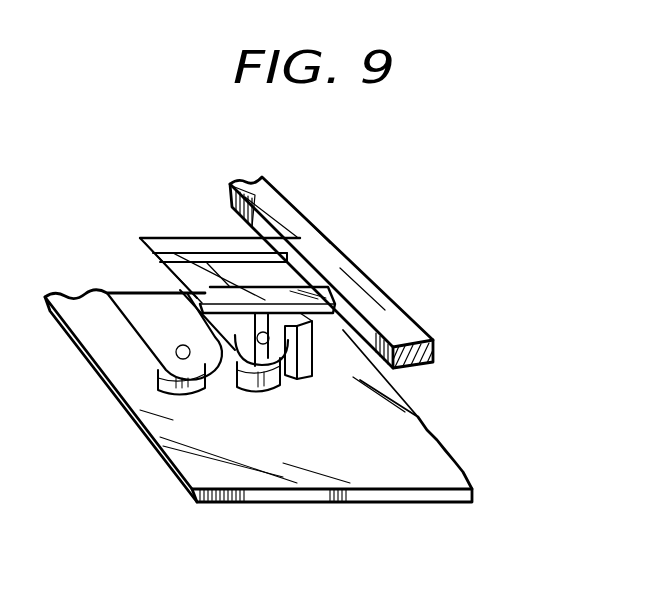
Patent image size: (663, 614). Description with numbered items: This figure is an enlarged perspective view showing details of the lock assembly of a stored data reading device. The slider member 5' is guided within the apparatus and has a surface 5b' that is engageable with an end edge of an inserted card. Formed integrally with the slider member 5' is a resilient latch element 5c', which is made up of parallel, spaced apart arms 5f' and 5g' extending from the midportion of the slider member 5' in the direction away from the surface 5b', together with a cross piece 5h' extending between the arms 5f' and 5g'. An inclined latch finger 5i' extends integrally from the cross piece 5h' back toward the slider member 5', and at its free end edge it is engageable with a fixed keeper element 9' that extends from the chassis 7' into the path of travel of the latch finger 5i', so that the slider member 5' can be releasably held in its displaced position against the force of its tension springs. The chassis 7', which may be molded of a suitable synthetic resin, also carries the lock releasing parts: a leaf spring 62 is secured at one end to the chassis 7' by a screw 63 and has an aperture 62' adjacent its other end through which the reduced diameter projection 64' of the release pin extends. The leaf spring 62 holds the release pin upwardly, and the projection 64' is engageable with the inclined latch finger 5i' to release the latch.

The slider member 5' is at (331, 272).
The surface 5b' is at (455, 334).
The resilient latch element 5c' is at (185, 159).
The arm 5f' is at (220, 193).
The arm 5g' is at (132, 237).
The cross piece 5h' is at (206, 236).
The inclined latch finger 5i' is at (257, 242).
The keeper element 9' is at (350, 364).
The leaf spring 62 is at (126, 372).
The aperture 62' is at (264, 372).
The screw 63 is at (173, 392).
The reduced diameter projection 64' is at (252, 405).
The chassis 7' is at (258, 416).